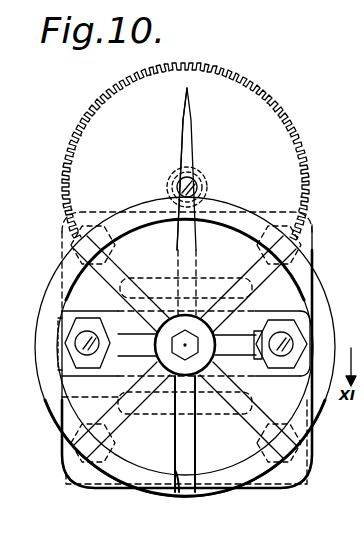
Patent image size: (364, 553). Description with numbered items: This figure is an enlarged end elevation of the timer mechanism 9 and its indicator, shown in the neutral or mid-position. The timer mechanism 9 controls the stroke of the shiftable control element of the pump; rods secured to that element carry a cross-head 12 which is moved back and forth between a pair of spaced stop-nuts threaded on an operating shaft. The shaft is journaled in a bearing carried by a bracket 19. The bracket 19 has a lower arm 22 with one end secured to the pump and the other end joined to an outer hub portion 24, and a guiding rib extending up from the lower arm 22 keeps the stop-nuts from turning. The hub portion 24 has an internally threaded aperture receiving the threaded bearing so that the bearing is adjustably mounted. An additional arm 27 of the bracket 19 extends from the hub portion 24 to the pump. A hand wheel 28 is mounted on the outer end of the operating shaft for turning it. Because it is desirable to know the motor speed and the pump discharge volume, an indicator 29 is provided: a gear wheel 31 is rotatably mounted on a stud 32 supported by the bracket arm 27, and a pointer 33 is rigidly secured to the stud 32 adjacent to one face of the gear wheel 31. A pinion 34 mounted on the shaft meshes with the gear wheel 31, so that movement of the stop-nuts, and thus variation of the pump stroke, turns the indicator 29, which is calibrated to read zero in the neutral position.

The timer mechanism 9 is at (197, 350).
The cross-head 12 is at (68, 300).
The bracket 19 is at (175, 283).
The lower arm 22 is at (178, 466).
The outer hub portion 24 is at (184, 356).
The additional arm 27 is at (197, 247).
The hand wheel 28 is at (212, 489).
The indicator 29 is at (195, 169).
The gear wheel 31 is at (292, 158).
The stud 32 is at (200, 184).
The pointer 33 is at (179, 142).
The pinion 34 is at (157, 344).